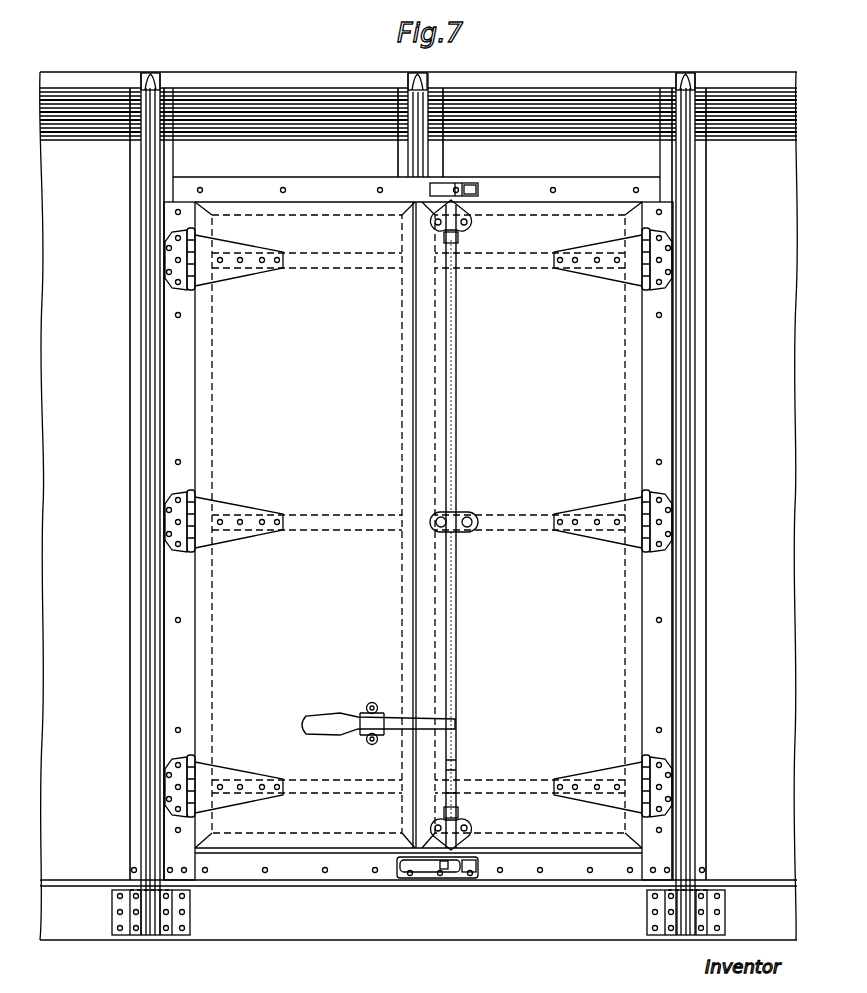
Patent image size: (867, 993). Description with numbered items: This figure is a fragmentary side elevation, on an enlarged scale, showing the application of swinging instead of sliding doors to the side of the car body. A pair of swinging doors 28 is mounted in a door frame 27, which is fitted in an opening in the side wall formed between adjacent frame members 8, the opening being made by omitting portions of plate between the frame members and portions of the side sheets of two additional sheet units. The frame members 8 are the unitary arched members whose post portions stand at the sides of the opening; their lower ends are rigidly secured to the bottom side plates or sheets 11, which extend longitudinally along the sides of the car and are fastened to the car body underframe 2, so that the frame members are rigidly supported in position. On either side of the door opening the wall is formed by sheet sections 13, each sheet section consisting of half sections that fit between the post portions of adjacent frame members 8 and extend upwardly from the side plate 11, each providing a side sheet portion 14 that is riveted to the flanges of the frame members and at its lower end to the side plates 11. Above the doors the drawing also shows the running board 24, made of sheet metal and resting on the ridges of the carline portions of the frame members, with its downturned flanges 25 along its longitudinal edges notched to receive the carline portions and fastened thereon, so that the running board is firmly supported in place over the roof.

The car body underframe 2 is at (458, 925).
The frame members 8 is at (148, 400).
The bottom side plates or sheets 11 is at (80, 927).
The sheet section 13 is at (419, 289).
The side sheet portion 14 is at (418, 723).
The running board 24 is at (304, 76).
The downturned flanges 25 is at (580, 78).
The door frame 27 is at (655, 366).
The swinging doors 28 is at (418, 530).